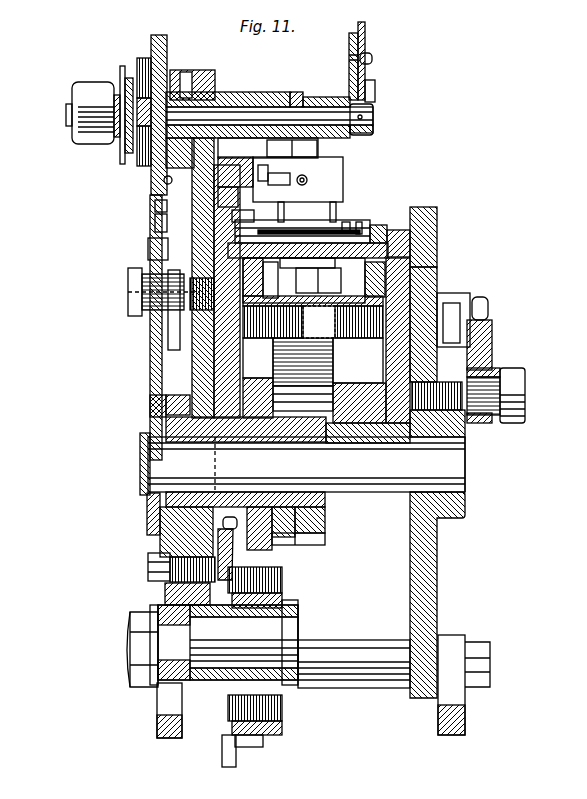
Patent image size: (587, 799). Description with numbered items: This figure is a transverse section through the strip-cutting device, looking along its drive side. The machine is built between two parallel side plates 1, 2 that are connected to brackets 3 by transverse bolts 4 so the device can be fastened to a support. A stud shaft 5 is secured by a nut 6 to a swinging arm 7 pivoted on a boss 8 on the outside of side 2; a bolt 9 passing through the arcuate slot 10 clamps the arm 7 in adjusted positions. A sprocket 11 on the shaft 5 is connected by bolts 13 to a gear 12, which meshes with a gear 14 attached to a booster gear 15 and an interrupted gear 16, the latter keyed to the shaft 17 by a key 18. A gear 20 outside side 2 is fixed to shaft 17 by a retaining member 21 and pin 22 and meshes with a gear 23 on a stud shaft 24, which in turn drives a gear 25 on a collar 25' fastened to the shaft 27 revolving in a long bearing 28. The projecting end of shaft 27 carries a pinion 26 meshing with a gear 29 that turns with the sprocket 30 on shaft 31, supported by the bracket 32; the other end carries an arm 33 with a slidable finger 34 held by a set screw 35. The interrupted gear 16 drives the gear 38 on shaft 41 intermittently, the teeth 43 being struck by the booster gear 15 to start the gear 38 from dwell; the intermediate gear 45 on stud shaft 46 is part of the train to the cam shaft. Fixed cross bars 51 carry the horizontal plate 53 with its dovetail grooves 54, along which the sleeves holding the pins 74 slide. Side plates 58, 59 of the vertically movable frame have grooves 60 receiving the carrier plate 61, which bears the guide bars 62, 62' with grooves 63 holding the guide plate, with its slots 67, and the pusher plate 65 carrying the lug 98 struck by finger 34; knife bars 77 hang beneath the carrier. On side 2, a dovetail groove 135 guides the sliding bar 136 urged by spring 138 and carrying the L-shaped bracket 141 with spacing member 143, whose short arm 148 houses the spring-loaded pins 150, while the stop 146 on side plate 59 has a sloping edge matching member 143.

The side plate 1 is at (437, 598).
The side plate 2 is at (147, 510).
The brackets 3 is at (160, 716).
The transverse bolts 4 is at (364, 688).
The stud shaft 5 is at (290, 632).
The nut 6 is at (130, 658).
The swinging arm 7 is at (170, 400).
The boss 8 is at (162, 432).
The bolt 9 is at (148, 563).
The arcuate slot 10 is at (165, 592).
The sprocket 11 is at (222, 760).
The gear 12 is at (262, 747).
The bolts 13 is at (282, 578).
The gear 14 is at (272, 540).
The booster gear 15 is at (325, 535).
The interrupted gear 16 is at (296, 520).
The shaft 17 is at (467, 482).
The key 18 is at (325, 498).
The gear 20 is at (150, 406).
The retaining member 21 is at (148, 452).
The pin 22 is at (140, 486).
The gear 23 is at (150, 372).
The stud shaft 24 is at (140, 290).
The gear 25 is at (145, 102).
The collar or sleeve 25' is at (192, 71).
The pinion 26 is at (128, 146).
The shaft 27 is at (262, 108).
The long bearing 28 is at (298, 93).
The gear 29 is at (143, 58).
The sprocket 30 is at (121, 70).
The shaft 31 is at (72, 108).
The bracket or support 32 is at (70, 126).
The arm 33 is at (349, 47).
The slidable finger 34 is at (364, 27).
The set screw 35 is at (372, 59).
The gear 38 is at (320, 372).
The shaft 41 is at (345, 412).
The teeth 43 is at (273, 357).
The intermediate gear 45 is at (492, 355).
The stud shaft 46 is at (525, 403).
The fixed cross bars 51 is at (354, 340).
The horizontally disposed plate 53 is at (350, 312).
The dovetail grooves 54 is at (289, 322).
The side plate 58 is at (410, 292).
The side plate 59 is at (205, 318).
The groove 60 is at (150, 244).
The carrier plate 61 is at (420, 228).
The side guide bar 62 is at (301, 222).
The side guide bar 62' is at (412, 219).
The grooves 63 is at (378, 226).
The pusher plate 65 is at (346, 224).
The longitudinal slots 67 is at (342, 266).
The pins 74 is at (336, 222).
The knife bars 77 is at (386, 272).
The lug 98 is at (362, 222).
The dove-tail groove 135 is at (267, 148).
The horizontally sliding bar 136 is at (164, 180).
The tension spring 138 is at (155, 205).
The L-shaped bracket 141 is at (268, 172).
The spacing member 143 is at (280, 182).
The stop 146 is at (155, 222).
The short arm 148 is at (337, 162).
The pins 150 is at (314, 180).